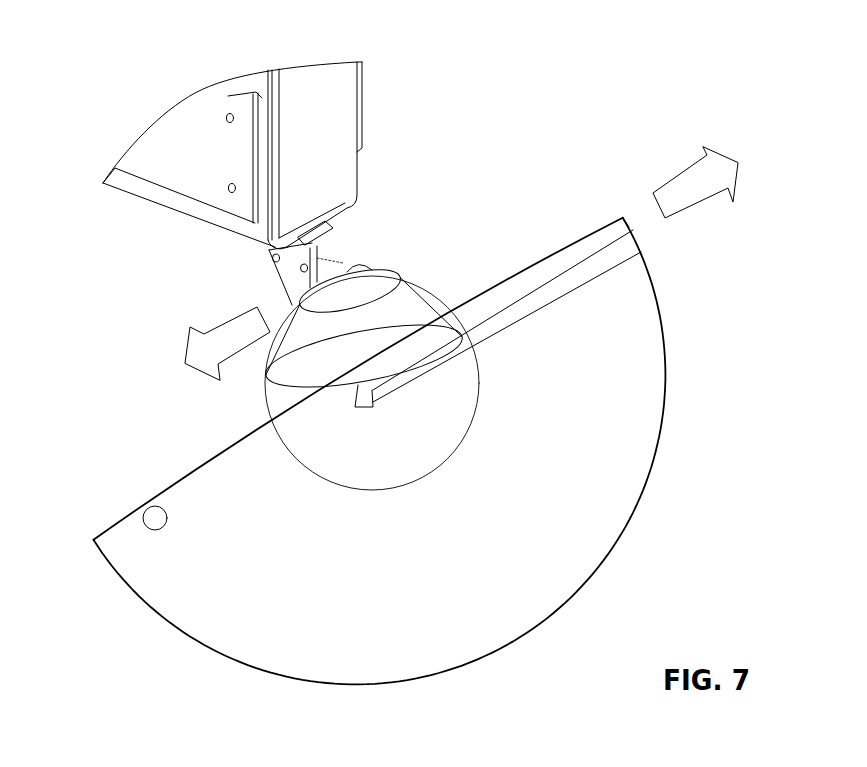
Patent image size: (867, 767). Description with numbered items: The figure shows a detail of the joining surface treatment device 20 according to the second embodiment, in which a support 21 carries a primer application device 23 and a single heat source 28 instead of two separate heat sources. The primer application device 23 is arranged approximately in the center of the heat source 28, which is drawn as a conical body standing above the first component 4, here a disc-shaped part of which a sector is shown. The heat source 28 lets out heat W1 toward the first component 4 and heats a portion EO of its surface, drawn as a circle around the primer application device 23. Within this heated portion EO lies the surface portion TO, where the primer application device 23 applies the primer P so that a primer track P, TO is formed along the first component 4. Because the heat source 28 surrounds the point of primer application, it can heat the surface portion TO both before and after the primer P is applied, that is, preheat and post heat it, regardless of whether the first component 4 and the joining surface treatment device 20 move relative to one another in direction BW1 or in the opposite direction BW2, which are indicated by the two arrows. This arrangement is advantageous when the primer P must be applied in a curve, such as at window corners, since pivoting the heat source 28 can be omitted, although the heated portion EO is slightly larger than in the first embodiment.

The first component 4 is at (645, 362).
The joining surface treatment device 20 is at (330, 137).
The support 21 is at (345, 178).
The primer application device 23 is at (306, 263).
The heat source 28 is at (345, 272).
The primer P is at (367, 413).
The surface portion TO is at (613, 247).
The heated portion EO is at (433, 415).
The heat W1 is at (280, 402).
The movement direction BW1 is at (686, 173).
The movement direction BW2 is at (227, 329).